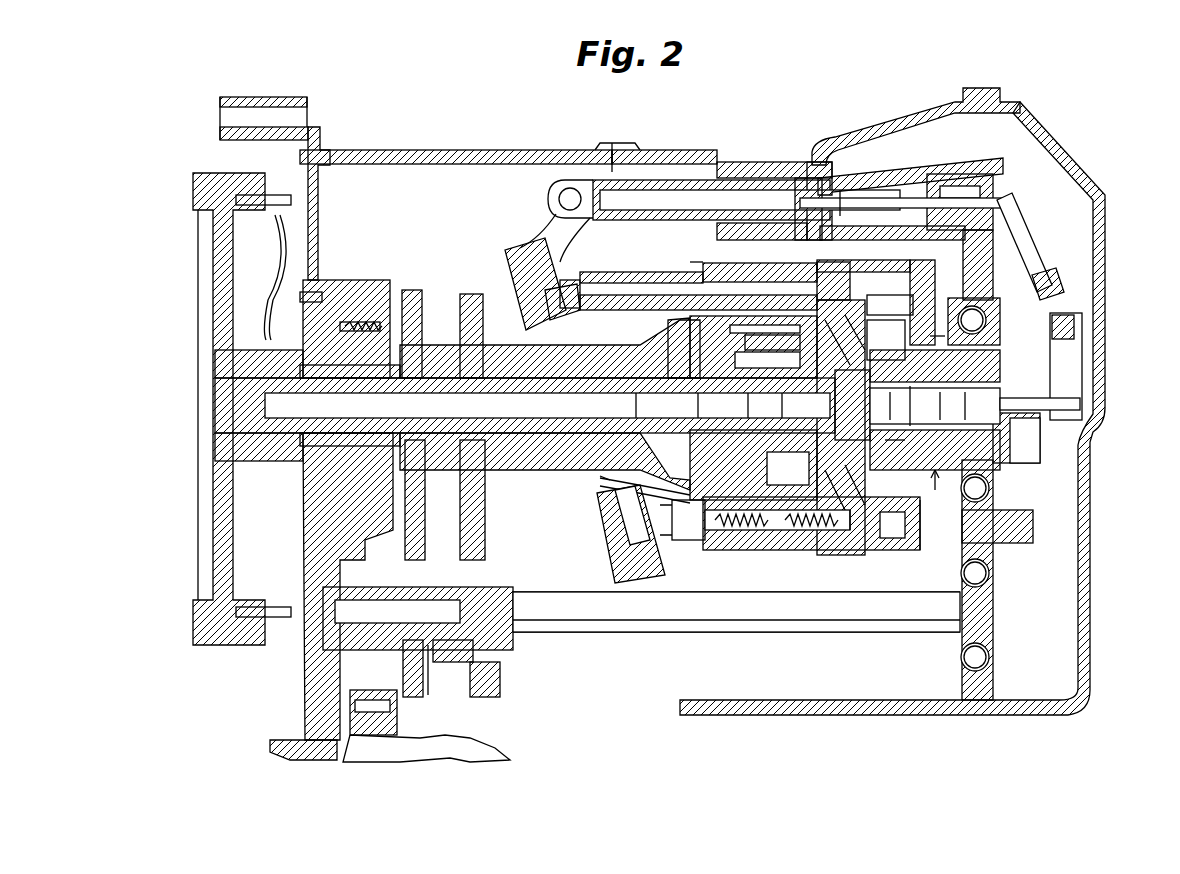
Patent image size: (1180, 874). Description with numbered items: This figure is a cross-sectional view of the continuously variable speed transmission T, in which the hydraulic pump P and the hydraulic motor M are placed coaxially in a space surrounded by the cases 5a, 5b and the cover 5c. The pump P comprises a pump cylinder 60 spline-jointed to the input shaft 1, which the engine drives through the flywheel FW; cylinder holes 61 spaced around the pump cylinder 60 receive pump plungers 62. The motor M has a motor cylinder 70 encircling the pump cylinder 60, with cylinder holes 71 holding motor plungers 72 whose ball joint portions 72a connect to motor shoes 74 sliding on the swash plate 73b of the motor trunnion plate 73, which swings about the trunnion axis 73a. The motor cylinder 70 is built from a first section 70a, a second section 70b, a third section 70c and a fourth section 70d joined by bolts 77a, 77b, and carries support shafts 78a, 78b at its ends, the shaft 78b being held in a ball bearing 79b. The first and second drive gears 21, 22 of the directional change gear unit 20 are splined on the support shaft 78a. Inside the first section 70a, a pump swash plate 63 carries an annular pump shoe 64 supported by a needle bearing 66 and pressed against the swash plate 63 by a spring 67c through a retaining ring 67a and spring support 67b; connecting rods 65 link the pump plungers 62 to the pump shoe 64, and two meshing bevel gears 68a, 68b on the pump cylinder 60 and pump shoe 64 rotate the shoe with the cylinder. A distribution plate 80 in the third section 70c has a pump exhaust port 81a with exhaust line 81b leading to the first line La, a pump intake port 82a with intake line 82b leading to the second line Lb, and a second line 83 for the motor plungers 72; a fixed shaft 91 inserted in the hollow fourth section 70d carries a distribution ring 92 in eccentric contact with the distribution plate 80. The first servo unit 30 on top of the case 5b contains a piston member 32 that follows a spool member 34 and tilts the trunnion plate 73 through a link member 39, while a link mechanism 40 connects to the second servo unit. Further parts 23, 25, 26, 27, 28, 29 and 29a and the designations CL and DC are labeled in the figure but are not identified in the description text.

The continuously variable speed transmission T is at (748, 108).
The input shaft 1 is at (525, 405).
The case 5a is at (488, 151).
The case 5b is at (678, 151).
The cover 5c is at (1085, 162).
The directional change gear unit 20 is at (512, 690).
The first drive gear 21 is at (412, 292).
The second drive gear 22 is at (468, 296).
The bearing retainer 23 is at (415, 700).
The bearing 25 is at (486, 697).
The bolt 26 is at (440, 660).
The pin 27 is at (430, 688).
The counter shaft 28 is at (560, 636).
The bolt 29 is at (440, 702).
The bolt 29a is at (342, 325).
The first servo unit 30 is at (845, 140).
The piston member 32 is at (640, 186).
The spool member 34 is at (880, 210).
The link member 39 is at (532, 235).
The link mechanism 40 is at (1082, 276).
The pump cylinder 60 is at (769, 405).
The cylinder holes 61 is at (753, 465).
The pump plungers 62 is at (830, 405).
The pump swash plate 63 is at (678, 340).
The annular pump shoe 64 is at (660, 345).
The connecting rods 65 is at (750, 332).
The needle bearing 66 is at (680, 330).
The retaining ring 67a is at (638, 405).
The spring support 67b is at (679, 405).
The spring 67c is at (708, 406).
The bevel gear 68a is at (592, 498).
The bevel gear 68b is at (682, 531).
The motor cylinder 70 is at (735, 262).
The first section 70a is at (507, 470).
The second section 70b is at (745, 552).
The third section 70c is at (838, 550).
The fourth section 70d is at (888, 550).
The cylinder holes 71 is at (766, 276).
The motor plungers 72 is at (816, 290).
The ball joint portions 72a is at (572, 288).
The motor trunnion plate 73 is at (600, 570).
The trunnion axis 73a is at (582, 404).
The swash plate 73b is at (600, 542).
The motor shoes 74 is at (560, 316).
The bolt 77a is at (722, 552).
The bolt 77b is at (906, 530).
The support shaft 78a is at (340, 372).
The support shaft 78b is at (1012, 356).
The ball bearing 79b is at (960, 308).
The distribution plate 80 is at (858, 330).
The pump exhaust port 81a is at (852, 336).
The exhaust line 81b is at (878, 360).
The pump intake port 82a is at (818, 552).
The intake line 82b is at (862, 472).
The second line 83 is at (866, 306).
The fixed shaft 91 is at (1040, 448).
The distribution ring 92 is at (878, 372).
The hydraulic motor M is at (700, 268).
The hydraulic pump P is at (600, 482).
The flywheel FW is at (190, 248).
The first line La is at (935, 413).
The second line Lb is at (938, 325).
The clutch CL is at (936, 490).
The drive coupling DC is at (1042, 416).